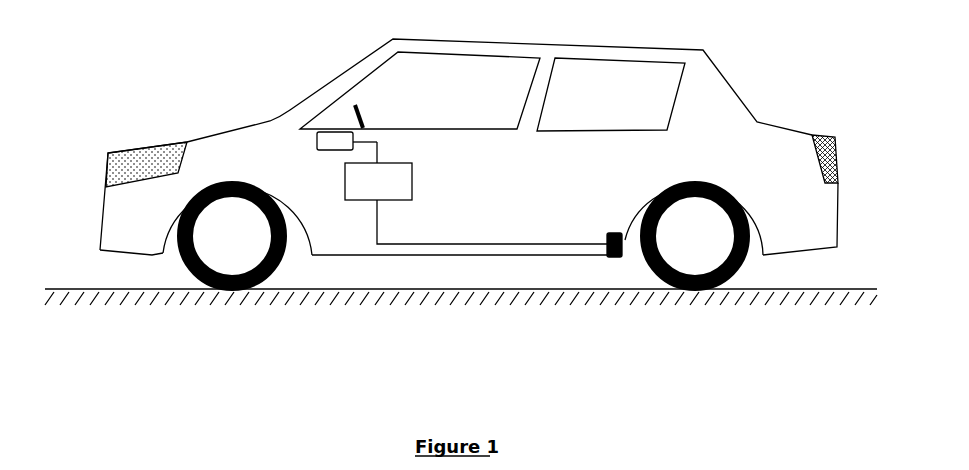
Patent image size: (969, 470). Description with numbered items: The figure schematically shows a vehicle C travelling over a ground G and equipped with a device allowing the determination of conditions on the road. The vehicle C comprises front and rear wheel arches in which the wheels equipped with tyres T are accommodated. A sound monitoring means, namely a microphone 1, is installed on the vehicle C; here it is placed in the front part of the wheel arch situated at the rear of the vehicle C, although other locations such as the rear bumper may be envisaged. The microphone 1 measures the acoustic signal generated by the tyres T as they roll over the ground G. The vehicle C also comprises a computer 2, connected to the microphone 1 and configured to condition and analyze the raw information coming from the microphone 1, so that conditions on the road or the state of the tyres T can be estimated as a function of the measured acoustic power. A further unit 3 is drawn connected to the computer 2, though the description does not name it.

The microphone 1 is at (615, 258).
The computer 2 is at (365, 187).
The display / warning unit 3 is at (328, 140).
The ground G is at (90, 290).
The vehicle C is at (720, 103).
The tyres T is at (725, 290).